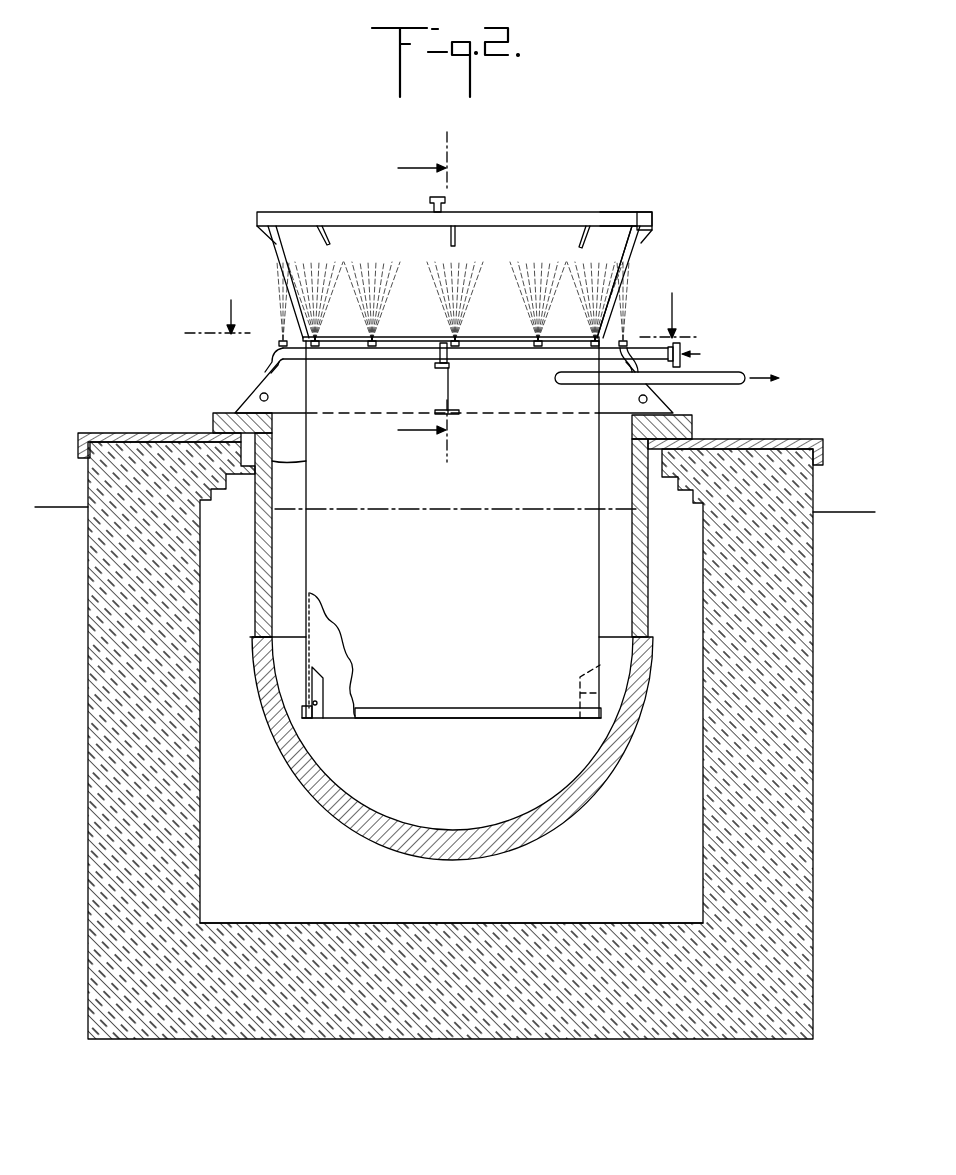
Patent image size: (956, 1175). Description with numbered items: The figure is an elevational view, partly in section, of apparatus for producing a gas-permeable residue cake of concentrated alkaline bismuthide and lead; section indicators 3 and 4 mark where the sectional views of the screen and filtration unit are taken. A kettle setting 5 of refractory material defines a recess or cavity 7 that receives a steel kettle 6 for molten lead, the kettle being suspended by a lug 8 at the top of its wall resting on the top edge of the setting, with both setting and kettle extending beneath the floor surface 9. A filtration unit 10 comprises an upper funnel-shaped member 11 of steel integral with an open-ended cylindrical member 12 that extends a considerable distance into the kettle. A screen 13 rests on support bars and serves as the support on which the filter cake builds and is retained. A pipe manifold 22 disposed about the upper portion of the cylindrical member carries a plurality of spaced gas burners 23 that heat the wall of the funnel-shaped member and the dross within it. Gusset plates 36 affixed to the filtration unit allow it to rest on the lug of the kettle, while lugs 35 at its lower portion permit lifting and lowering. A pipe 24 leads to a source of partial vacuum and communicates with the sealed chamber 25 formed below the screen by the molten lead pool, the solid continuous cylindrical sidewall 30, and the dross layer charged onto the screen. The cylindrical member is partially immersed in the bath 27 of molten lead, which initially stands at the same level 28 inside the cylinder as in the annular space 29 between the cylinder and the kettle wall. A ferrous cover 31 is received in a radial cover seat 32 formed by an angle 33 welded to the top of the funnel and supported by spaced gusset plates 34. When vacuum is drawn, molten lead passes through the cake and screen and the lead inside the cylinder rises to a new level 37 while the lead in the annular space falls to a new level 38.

The section line 3- 3 is at (442, 315).
The section line 4- 4 is at (422, 297).
The kettle setting 5 is at (787, 662).
The kettle 6 is at (648, 574).
The recess or cavity 7 is at (583, 882).
The lug 8 is at (677, 428).
The floor surface 9 is at (852, 513).
The filtration unit 10 is at (607, 315).
The funnel-shaped member 11 is at (626, 262).
The cylindrical member 12 is at (598, 457).
The screen 13 is at (340, 333).
The pipe manifold 22 is at (557, 348).
The gas burners 23 is at (282, 334).
The pipe 24 is at (668, 346).
The sealed chamber 25 is at (582, 395).
The bath of molten lead 27 is at (320, 650).
The level 28 is at (435, 510).
The annular space 29 is at (284, 572).
The cylindrical sidewall 30 is at (272, 461).
The cover 31 is at (505, 213).
The cover seat 32 is at (623, 212).
The angle 33 is at (652, 218).
The gusset plates 34 is at (265, 231).
The lugs 35 is at (320, 688).
The gusset plates 36 is at (278, 376).
The level 37 is at (355, 413).
The level 38 is at (290, 630).